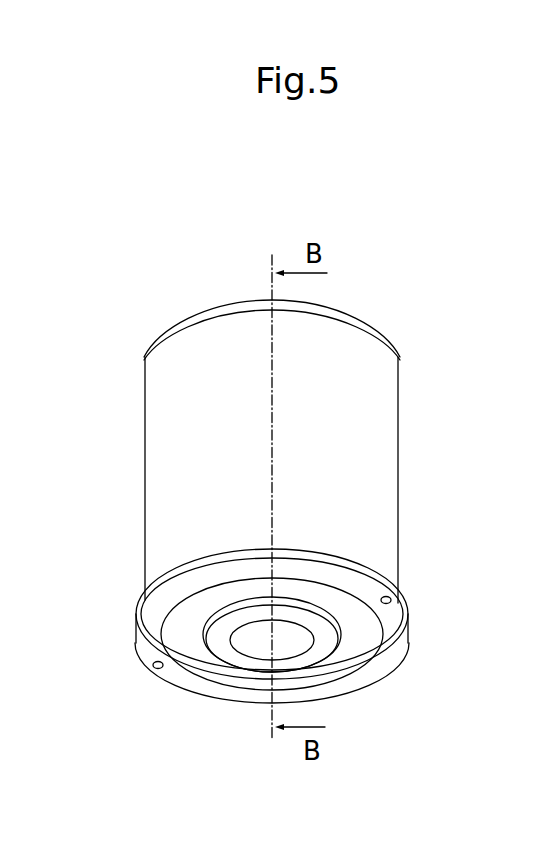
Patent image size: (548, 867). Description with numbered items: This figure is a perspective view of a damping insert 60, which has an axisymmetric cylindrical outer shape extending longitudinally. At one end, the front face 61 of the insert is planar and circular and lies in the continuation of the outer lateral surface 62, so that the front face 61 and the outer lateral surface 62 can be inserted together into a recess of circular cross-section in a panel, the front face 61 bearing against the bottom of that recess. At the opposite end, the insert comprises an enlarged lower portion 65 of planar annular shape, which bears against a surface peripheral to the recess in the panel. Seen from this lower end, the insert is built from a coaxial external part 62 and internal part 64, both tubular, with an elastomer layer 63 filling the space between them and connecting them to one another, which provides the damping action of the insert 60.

The damping insert 60 is at (158, 285).
The front face 61 is at (147, 353).
The outer lateral surface 62 is at (146, 472).
The elastomer layer 63 is at (352, 653).
The internal part 64 is at (218, 639).
The enlarged lower portion 65 is at (136, 626).